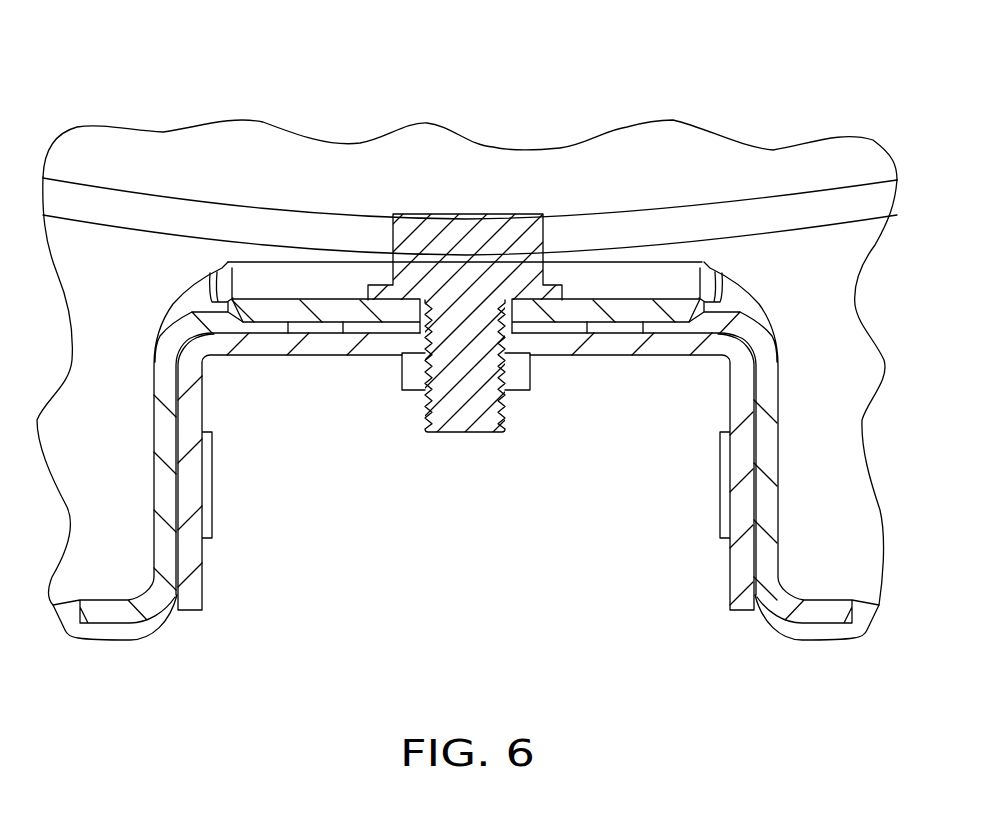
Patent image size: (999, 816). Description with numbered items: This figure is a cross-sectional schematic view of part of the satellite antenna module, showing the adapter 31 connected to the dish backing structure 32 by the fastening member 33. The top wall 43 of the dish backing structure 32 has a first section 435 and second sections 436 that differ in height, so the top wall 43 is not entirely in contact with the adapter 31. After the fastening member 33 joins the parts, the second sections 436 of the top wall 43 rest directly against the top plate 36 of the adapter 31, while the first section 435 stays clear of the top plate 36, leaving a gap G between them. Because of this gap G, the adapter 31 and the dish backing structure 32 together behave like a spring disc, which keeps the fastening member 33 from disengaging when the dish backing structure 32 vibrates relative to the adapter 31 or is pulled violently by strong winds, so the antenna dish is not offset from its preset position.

The adapter 31 is at (766, 505).
The dish backing structure 32 is at (789, 451).
The fastening member 33 is at (466, 248).
The top plate 36 is at (323, 347).
The top wall 43 is at (277, 282).
The first section 435 is at (638, 267).
The second sections 436 is at (740, 286).
The gap G is at (364, 316).